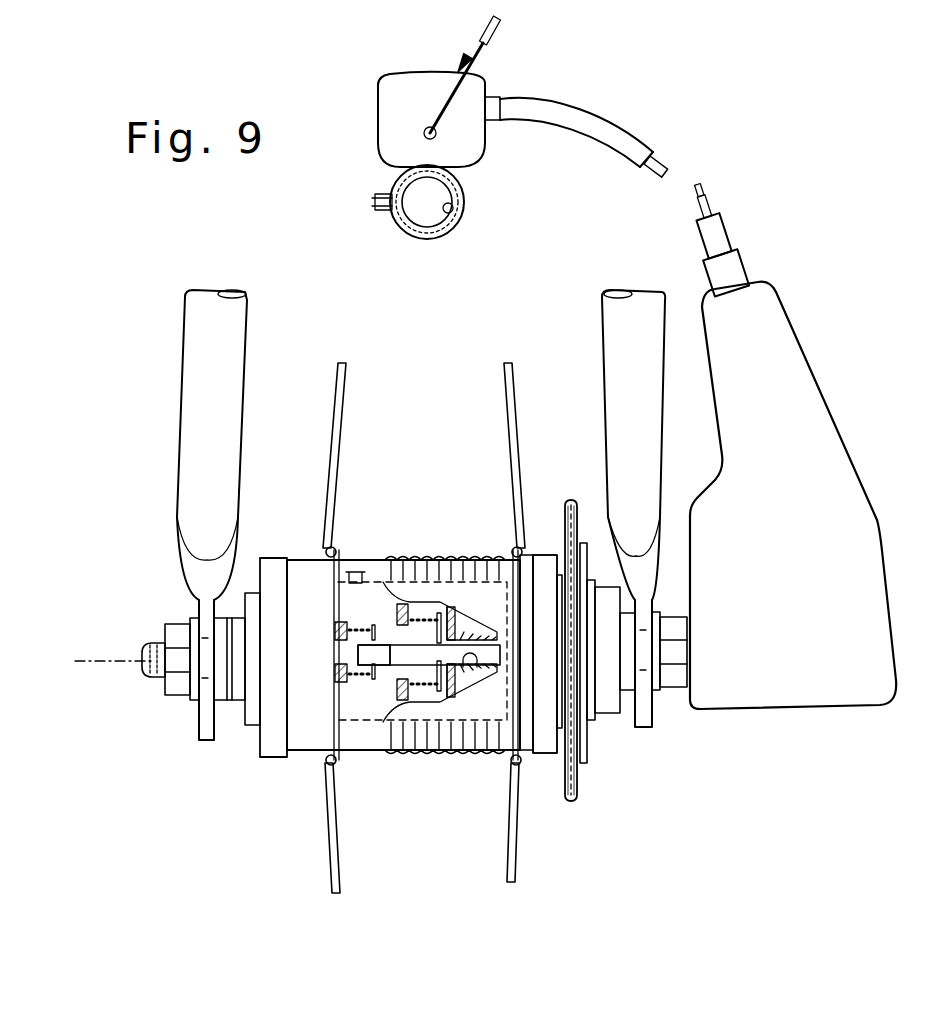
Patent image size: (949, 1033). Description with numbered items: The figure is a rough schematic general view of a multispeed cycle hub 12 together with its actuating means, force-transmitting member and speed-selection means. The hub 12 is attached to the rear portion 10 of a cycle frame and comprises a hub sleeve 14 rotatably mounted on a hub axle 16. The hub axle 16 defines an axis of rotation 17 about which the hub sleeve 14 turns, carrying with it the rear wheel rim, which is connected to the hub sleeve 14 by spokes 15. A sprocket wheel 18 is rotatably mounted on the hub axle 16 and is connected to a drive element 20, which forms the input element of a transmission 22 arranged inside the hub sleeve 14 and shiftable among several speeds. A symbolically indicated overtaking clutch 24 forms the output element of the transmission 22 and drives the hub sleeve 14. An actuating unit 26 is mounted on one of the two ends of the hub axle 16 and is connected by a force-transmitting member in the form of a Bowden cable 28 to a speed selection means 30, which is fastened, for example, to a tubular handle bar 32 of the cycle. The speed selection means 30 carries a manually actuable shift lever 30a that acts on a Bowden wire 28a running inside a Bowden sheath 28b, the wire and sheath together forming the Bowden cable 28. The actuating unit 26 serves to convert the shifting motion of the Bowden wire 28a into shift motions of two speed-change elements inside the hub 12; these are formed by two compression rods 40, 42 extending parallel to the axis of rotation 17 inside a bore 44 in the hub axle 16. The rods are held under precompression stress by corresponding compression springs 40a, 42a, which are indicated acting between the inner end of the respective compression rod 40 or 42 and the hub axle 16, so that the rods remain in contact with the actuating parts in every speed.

The rear portion of cycle frame 10 is at (198, 325).
The multispeed cycle hub 12 is at (445, 764).
The hub sleeve 14 is at (383, 562).
The spokes 15 is at (340, 380).
The hub axle 16 is at (150, 678).
The axis of rotation 17 is at (108, 660).
The sprocket wheel 18 is at (571, 500).
The drive element 20 is at (557, 593).
The transmission 22 is at (362, 752).
The overtaking clutch 24 is at (354, 570).
The actuating unit 26 is at (798, 714).
The Bowden cable 28 is at (658, 157).
The Bowden wire 28a is at (672, 170).
The Bowden sheath 28b is at (728, 236).
The speed selection means 30 is at (470, 97).
The shift lever 30a is at (476, 52).
The tubular handle bar 32 is at (448, 213).
The compression rod 40 is at (358, 655).
The compression spring 40a is at (438, 682).
The compression rod 42 is at (453, 610).
The compression spring 42a is at (470, 690).
The bore 44 is at (496, 672).